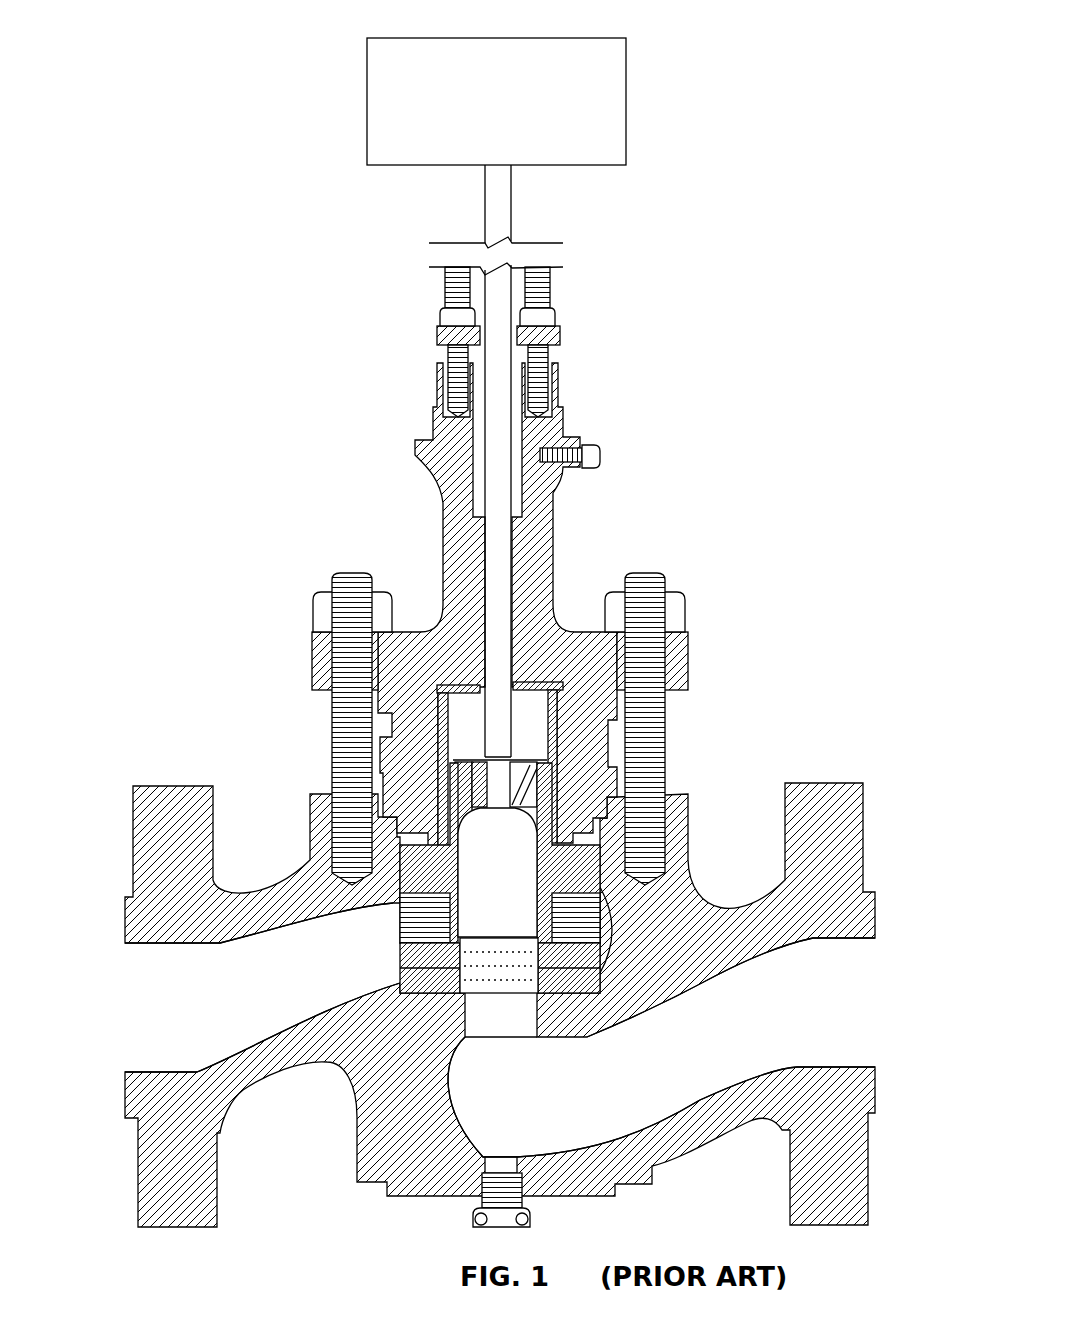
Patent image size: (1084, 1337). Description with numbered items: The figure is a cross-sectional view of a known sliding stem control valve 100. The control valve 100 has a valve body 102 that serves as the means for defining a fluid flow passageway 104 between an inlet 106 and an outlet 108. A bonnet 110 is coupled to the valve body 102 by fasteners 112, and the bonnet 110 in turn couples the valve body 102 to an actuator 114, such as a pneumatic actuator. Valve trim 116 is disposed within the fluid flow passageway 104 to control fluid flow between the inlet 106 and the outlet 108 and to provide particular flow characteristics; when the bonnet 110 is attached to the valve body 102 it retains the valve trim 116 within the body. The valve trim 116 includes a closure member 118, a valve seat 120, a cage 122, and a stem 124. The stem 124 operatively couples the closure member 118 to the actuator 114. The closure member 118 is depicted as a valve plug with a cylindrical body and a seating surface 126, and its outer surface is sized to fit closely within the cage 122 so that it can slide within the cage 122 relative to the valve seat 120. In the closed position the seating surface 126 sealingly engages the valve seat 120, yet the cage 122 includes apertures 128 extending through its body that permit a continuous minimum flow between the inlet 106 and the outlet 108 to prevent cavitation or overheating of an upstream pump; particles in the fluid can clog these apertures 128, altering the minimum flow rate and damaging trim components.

The control valve 100 is at (793, 31).
The valve body 102 is at (172, 783).
The fluid flow passageway 104 is at (560, 1103).
The inlet 106 is at (124, 1041).
The outlet 108 is at (878, 1003).
The bonnet 110 is at (557, 553).
The fasteners 112 is at (353, 571).
The actuator 114 is at (628, 93).
The valve trim 116 is at (535, 732).
The closure member 118 is at (452, 815).
The valve seat 120 is at (442, 934).
The cage 122 is at (600, 919).
The stem 124 is at (513, 444).
The seating surface 126 is at (463, 937).
The apertures 128 is at (400, 965).